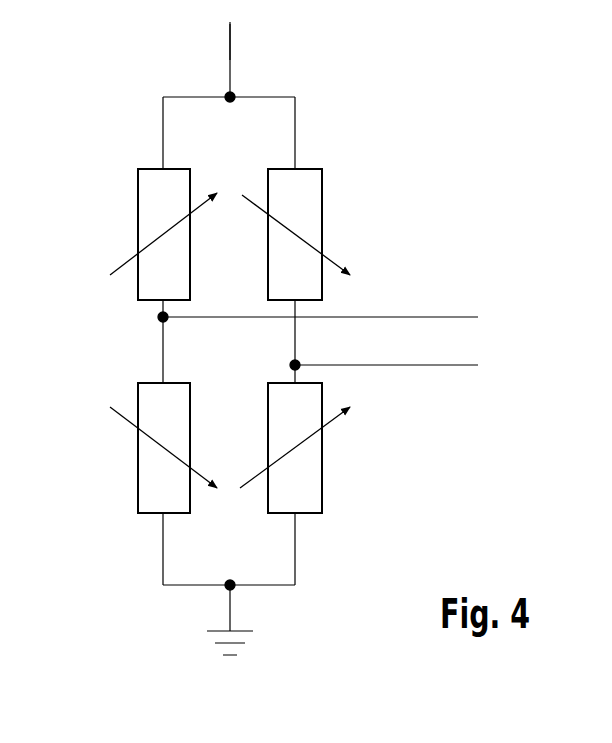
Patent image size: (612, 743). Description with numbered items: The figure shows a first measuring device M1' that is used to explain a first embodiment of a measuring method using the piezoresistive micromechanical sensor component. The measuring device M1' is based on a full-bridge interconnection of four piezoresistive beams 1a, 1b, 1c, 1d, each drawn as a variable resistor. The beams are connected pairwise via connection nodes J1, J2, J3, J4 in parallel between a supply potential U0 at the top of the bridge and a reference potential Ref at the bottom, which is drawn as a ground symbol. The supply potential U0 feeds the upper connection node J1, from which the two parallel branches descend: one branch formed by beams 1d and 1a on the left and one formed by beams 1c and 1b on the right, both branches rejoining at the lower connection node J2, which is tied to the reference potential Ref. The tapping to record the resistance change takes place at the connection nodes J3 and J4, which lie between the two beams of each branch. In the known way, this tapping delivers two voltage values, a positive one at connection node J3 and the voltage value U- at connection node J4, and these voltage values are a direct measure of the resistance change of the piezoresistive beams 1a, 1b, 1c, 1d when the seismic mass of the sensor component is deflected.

The measuring device M1' is at (317, 292).
The supply potential U0 is at (231, 30).
The piezoresistive beam 1a is at (138, 489).
The piezoresistive beam 1b is at (322, 489).
The piezoresistive beam 1c is at (322, 193).
The piezoresistive beam 1d is at (138, 193).
The connection node J1 is at (233, 94).
The connection node J2 is at (233, 589).
The connection node J3 is at (160, 318).
The connection node J4 is at (292, 365).
The voltage value U- is at (403, 367).
The reference potential Ref is at (208, 634).